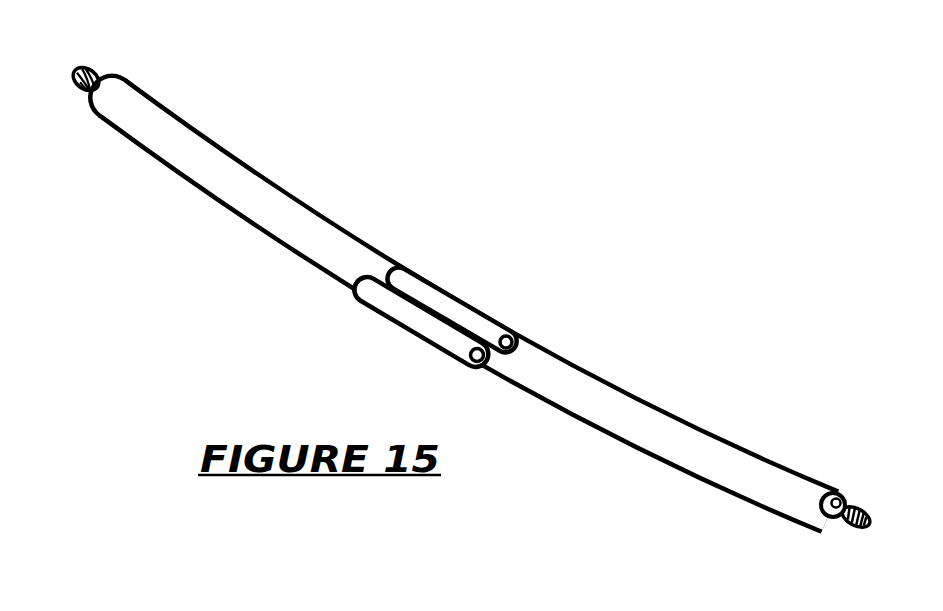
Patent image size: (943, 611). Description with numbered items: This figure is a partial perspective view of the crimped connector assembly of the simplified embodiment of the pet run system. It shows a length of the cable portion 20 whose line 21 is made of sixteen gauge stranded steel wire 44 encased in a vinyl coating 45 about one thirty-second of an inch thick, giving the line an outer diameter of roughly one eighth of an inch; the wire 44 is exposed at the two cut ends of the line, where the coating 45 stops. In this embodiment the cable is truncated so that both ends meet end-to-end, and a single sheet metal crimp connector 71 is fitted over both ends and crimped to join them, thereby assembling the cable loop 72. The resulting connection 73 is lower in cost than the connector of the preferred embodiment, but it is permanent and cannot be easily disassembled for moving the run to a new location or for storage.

The cable portion 20 is at (172, 166).
The line 21 is at (115, 128).
The stranded steel wire 44 is at (89, 64).
The vinyl coating 45 is at (850, 483).
The sheet metal crimp connector 71 is at (480, 303).
The cable loop 72 is at (238, 212).
The connection 73 is at (387, 318).